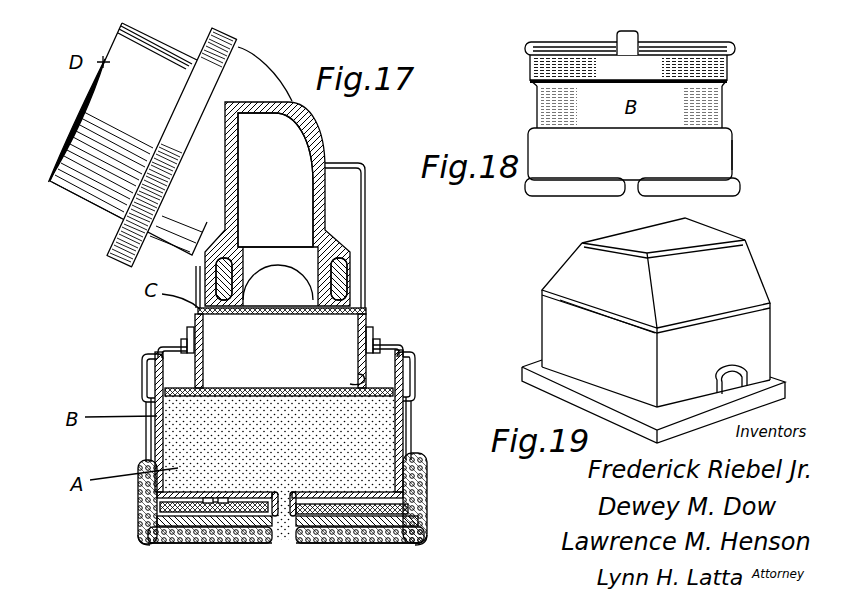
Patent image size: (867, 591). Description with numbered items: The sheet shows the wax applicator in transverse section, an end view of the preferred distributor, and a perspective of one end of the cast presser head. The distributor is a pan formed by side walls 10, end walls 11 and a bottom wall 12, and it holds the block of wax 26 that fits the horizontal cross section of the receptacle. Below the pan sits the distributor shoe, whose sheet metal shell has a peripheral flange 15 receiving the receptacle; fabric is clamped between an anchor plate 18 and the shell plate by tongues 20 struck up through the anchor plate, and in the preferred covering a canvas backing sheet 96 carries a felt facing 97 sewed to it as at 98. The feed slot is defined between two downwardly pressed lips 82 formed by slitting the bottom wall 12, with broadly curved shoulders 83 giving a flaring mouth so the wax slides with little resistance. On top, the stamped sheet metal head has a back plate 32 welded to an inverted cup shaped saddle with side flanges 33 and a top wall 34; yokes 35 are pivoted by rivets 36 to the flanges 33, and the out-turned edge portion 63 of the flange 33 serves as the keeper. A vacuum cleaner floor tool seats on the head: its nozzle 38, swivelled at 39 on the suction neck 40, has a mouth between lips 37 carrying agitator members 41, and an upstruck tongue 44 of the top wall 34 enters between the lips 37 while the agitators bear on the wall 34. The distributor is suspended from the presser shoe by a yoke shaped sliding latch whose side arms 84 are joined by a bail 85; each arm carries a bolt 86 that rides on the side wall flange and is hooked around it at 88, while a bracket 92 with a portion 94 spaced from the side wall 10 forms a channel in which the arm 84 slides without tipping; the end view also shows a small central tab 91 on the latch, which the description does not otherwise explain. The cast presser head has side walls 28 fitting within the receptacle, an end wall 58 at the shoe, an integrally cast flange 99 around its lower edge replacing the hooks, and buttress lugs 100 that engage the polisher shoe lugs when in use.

In FIG. 17, the side walls 10 is at (146, 445).
In FIG. 18, the end walls 11 is at (630, 106).
In FIG. 17, the bottom wall 12 is at (207, 487).
In FIG. 17, the peripheral flange 15 is at (142, 494).
In FIG. 18, the peripheral flange 15 is at (630, 154).
In FIG. 17, the anchor plate 18 is at (142, 517).
In FIG. 17, the tongues 20 is at (220, 542).
In FIG. 17, the wax 26 is at (279, 468).
In FIG. 19, the side walls 28 is at (656, 312).
In FIG. 17, the back plate 32 is at (282, 392).
In FIG. 17, the side flanges 33 is at (203, 354).
In FIG. 17, the top wall 34 is at (281, 314).
In FIG. 17, the yokes 35 is at (367, 250).
In FIG. 17, the rivets 36 is at (186, 334).
In FIG. 17, the lips 37 is at (312, 233).
In FIG. 17, the nozzle 38 is at (272, 124).
In FIG. 17, the swivel 39 is at (236, 35).
In FIG. 17, the suction neck 40 is at (128, 139).
In FIG. 17, the agitator members 41 is at (306, 280).
In FIG. 17, the tongue 44 is at (245, 296).
In FIG. 19, the end wall 58 is at (607, 326).
In FIG. 17, the out-turned edge portion 63 is at (356, 376).
In FIG. 17, the lips 82 is at (277, 492).
In FIG. 17, the curved shoulders 83 is at (293, 490).
In FIG. 17, the side arms 84 is at (144, 395).
In FIG. 18, the bail 85 is at (628, 68).
In FIG. 17, the bolt 86 is at (160, 346).
In FIG. 18, the bolt 86 is at (543, 43).
In FIG. 17, the hook 88 is at (142, 358).
In FIG. 18, the hook 88 is at (526, 48).
In FIG. 18, the tab 91 is at (634, 37).
In FIG. 17, the bracket 92 is at (155, 428).
In FIG. 18, the bracket 92 is at (538, 103).
In FIG. 17, the spaced portion 94 is at (142, 378).
In FIG. 18, the spaced portion 94 is at (530, 70).
In FIG. 17, the backing sheet 96 is at (142, 528).
In FIG. 18, the backing sheet 96 is at (734, 155).
In FIG. 17, the felt facing 97 is at (362, 545).
In FIG. 18, the felt facing 97 is at (742, 187).
In FIG. 17, the sewing 98 is at (300, 545).
In FIG. 19, the flange 99 is at (584, 392).
In FIG. 19, the buttress lugs 100 is at (732, 372).